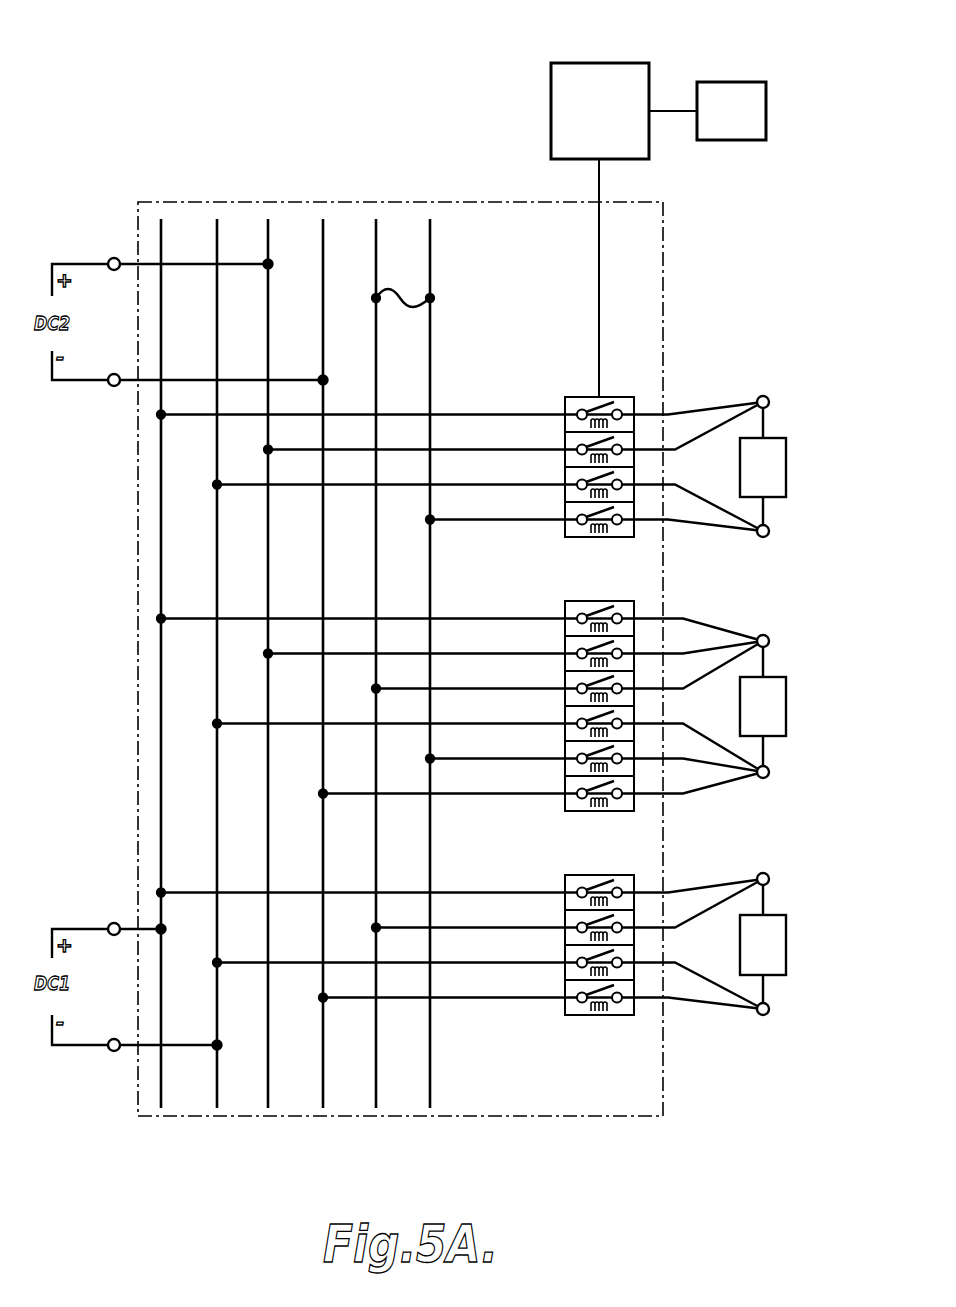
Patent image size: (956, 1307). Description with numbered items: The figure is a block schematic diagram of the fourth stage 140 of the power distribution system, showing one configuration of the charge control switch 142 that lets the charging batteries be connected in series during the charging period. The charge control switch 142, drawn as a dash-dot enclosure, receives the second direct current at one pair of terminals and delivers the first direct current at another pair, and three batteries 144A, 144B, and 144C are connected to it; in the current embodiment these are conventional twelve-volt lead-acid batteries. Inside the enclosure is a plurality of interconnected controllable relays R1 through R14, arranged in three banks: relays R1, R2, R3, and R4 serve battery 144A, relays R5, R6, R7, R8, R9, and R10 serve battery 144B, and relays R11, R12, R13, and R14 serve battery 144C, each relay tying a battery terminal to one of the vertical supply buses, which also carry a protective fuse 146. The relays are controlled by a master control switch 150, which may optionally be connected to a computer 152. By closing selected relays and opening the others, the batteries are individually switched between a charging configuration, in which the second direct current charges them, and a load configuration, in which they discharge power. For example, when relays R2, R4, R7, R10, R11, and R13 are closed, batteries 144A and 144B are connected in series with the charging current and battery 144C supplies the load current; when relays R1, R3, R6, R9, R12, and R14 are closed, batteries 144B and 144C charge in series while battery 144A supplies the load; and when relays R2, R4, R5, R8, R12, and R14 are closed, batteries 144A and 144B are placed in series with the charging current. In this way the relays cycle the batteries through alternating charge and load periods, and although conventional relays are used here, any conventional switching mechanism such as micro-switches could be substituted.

The fourth stage 140 is at (238, 74).
The charge control switch 142 is at (663, 316).
The battery 144A is at (815, 454).
The battery 144B is at (815, 694).
The battery 144C is at (815, 931).
The protective fuse 146 is at (400, 293).
The master control switch 150 is at (628, 64).
The computer 152 is at (768, 100).
The relay R1 is at (564, 400).
The relay R2 is at (564, 435).
The relay R3 is at (564, 470).
The relay R4 is at (564, 505).
The relay R5 is at (564, 604).
The relay R6 is at (564, 639).
The relay R7 is at (564, 674).
The relay R8 is at (564, 709).
The relay R9 is at (564, 744).
The relay R10 is at (564, 779).
The relay R11 is at (564, 878).
The relay R12 is at (564, 913).
The relay R13 is at (564, 948).
The relay R14 is at (564, 983).